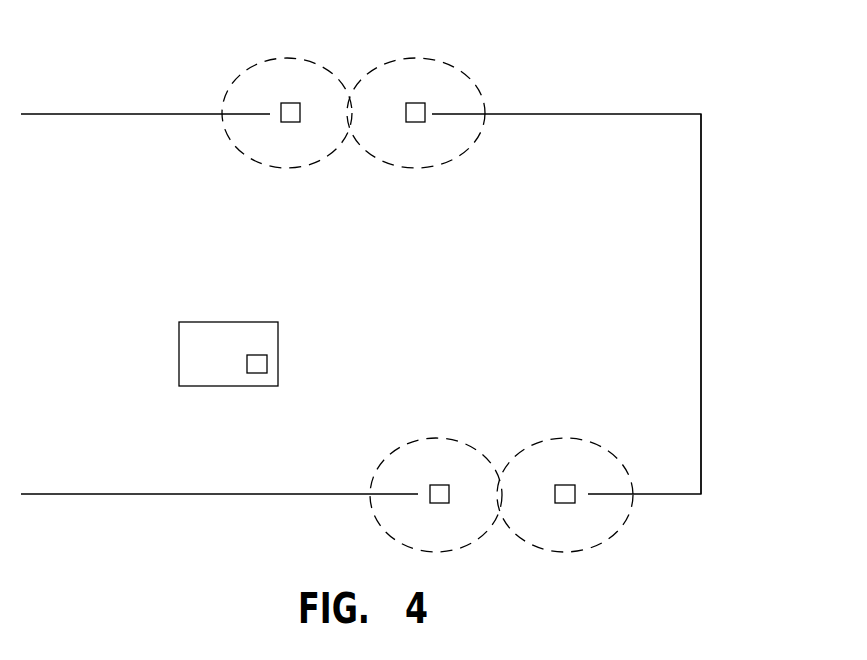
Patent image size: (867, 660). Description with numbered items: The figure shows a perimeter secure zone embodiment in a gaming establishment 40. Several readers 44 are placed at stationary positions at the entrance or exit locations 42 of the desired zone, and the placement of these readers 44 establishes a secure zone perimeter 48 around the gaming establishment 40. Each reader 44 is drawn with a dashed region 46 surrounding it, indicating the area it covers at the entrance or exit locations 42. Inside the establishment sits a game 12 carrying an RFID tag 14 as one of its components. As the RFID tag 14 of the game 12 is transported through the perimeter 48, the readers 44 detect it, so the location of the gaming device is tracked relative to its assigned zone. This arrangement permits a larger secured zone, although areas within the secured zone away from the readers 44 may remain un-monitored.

The game 12 is at (229, 322).
The RFID tag 14 is at (255, 355).
The gaming establishment 40 is at (110, 446).
The entrance or exit location 42 is at (328, 106).
The reader 44 is at (290, 122).
The detection zone 46 is at (443, 60).
The secure zone perimeter 48 is at (703, 303).